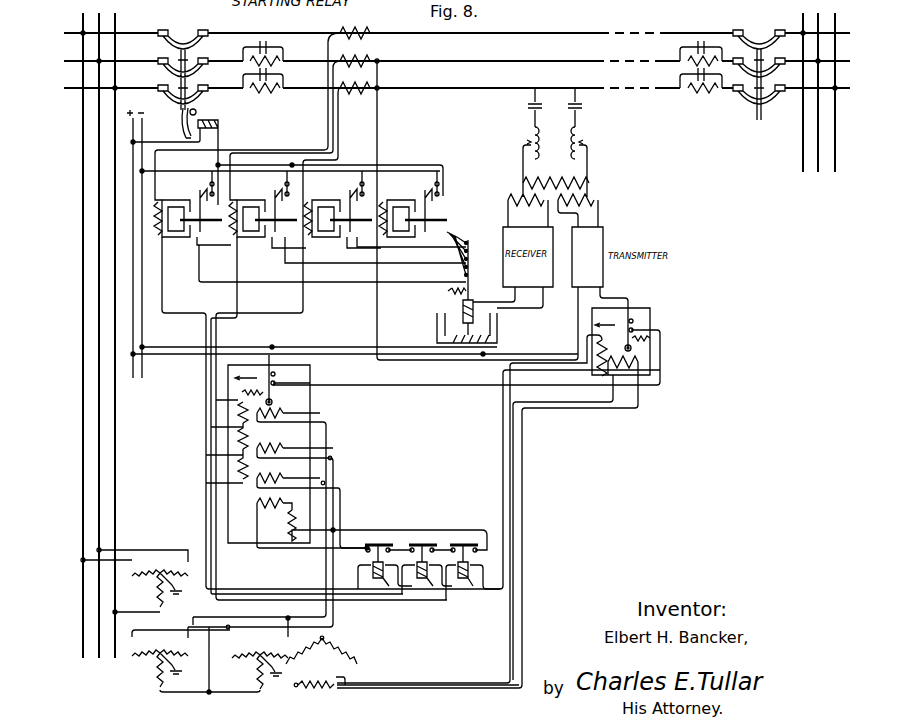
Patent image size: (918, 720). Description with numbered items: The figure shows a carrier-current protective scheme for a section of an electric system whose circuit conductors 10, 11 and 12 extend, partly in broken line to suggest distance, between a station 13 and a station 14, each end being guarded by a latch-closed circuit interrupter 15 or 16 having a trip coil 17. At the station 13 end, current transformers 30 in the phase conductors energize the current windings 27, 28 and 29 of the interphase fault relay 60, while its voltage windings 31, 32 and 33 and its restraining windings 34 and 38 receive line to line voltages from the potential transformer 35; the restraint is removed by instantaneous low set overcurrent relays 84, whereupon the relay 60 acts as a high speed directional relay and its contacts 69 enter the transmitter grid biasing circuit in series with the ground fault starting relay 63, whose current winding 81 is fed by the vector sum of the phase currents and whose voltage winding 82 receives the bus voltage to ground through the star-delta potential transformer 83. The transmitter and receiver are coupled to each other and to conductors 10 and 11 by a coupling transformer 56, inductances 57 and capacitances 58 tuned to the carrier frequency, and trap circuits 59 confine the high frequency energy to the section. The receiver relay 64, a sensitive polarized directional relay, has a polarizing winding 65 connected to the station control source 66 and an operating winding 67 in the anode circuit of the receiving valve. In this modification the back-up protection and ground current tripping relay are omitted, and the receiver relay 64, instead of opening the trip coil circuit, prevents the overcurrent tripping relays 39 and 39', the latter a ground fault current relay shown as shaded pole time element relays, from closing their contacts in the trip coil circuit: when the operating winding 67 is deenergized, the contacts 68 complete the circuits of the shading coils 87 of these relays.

The circuit conductor 10 is at (492, 93).
The circuit conductor 11 is at (497, 64).
The circuit conductor 12 is at (502, 36).
The station 13 is at (80, 243).
The station 14 is at (828, 195).
The circuit interrupter 15 is at (203, 97).
The circuit interrupter 16 is at (748, 98).
The trip coil 17 is at (219, 121).
The current winding 27 is at (246, 467).
The current winding 28 is at (246, 436).
The current winding 29 is at (250, 409).
The current transformer 30 is at (345, 38).
The voltage winding 31 is at (283, 478).
The voltage winding 32 is at (285, 446).
The voltage winding 33 is at (283, 412).
The restraining winding 34 is at (284, 503).
The potential transformer 35 is at (174, 625).
The restraining winding 38 is at (286, 520).
The overcurrent relay 39 is at (267, 220).
The ground fault current relay 39' is at (417, 220).
The coupling transformer 56 is at (588, 195).
The inductance 57 is at (572, 145).
The capacitance 58 is at (566, 104).
The trap circuit 59 is at (286, 52).
The interphase fault relay 60 is at (310, 397).
The ground fault starting relay 63 is at (650, 324).
The receiver relay 64 is at (441, 344).
The polarizing winding 65 is at (483, 353).
The station control source 66 is at (133, 336).
The operating winding 67 is at (461, 305).
The receiver relay contacts 68 is at (457, 262).
The interphase fault relay contacts 69 is at (275, 375).
The current winding 81 is at (608, 346).
The voltage winding 82 is at (490, 517).
The star-delta potential transformer 83 is at (295, 663).
The low set overcurrent relay 84 is at (384, 565).
The shading coil 87 is at (280, 220).